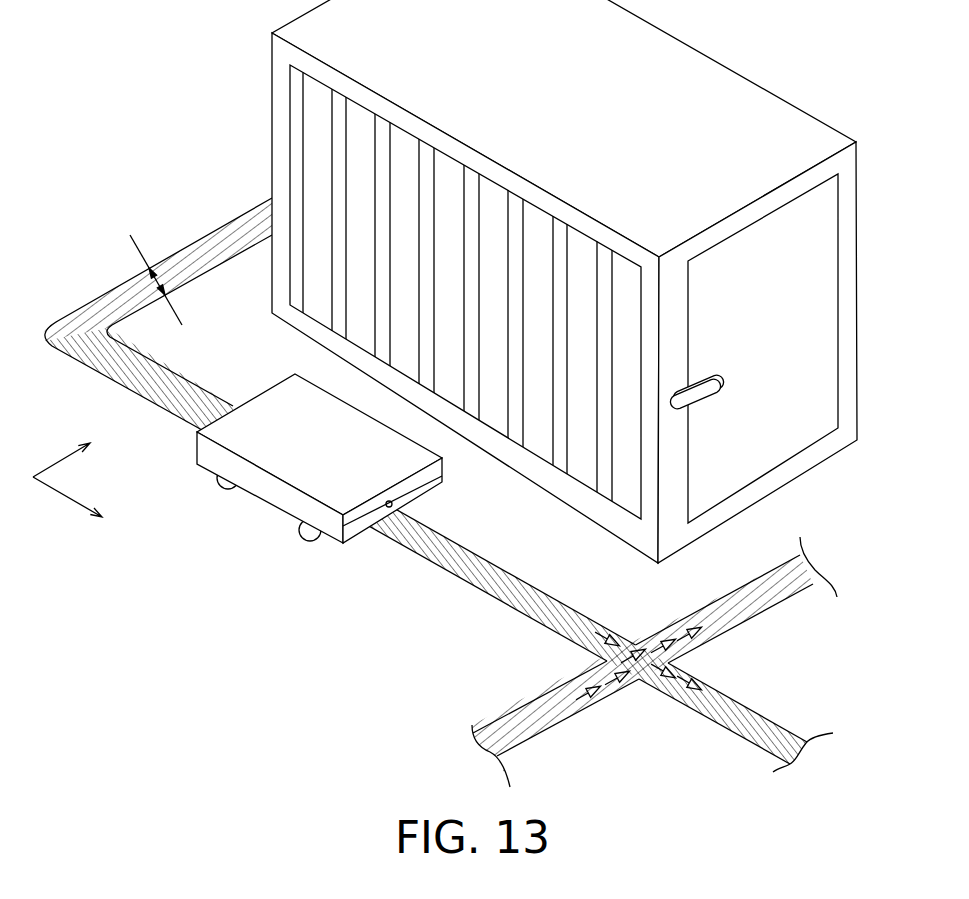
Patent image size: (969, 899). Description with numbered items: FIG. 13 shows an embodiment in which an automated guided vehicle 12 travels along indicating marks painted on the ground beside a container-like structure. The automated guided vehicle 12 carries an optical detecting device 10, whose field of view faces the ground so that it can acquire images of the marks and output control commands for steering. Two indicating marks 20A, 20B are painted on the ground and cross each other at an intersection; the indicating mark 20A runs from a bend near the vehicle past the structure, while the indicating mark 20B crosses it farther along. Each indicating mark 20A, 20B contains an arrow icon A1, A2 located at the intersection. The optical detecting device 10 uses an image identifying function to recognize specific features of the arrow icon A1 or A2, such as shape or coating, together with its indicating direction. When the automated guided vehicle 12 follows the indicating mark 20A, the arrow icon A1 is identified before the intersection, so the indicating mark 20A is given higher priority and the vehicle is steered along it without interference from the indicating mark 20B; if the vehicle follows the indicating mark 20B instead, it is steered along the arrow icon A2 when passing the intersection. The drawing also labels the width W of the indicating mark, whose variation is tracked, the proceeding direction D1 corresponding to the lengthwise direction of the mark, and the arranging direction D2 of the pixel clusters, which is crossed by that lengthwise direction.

The optical detecting device 10 is at (389, 505).
The automated guided vehicle 12 is at (292, 462).
The indicating mark 20A is at (503, 587).
The indicating mark 20B is at (758, 602).
The arrow icon A1 is at (610, 645).
The arrow icon A2 is at (604, 690).
The width W is at (130, 235).
The proceeding direction D1 is at (89, 514).
The arranging direction D2 is at (79, 448).